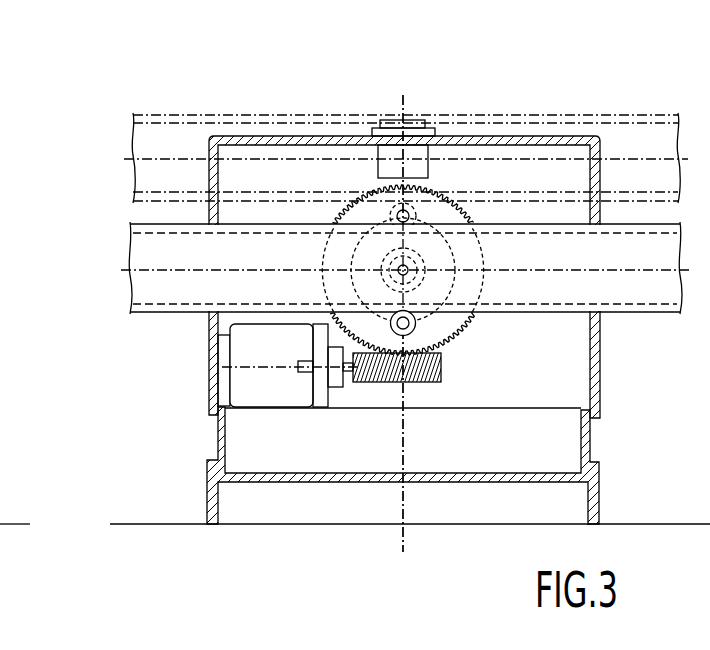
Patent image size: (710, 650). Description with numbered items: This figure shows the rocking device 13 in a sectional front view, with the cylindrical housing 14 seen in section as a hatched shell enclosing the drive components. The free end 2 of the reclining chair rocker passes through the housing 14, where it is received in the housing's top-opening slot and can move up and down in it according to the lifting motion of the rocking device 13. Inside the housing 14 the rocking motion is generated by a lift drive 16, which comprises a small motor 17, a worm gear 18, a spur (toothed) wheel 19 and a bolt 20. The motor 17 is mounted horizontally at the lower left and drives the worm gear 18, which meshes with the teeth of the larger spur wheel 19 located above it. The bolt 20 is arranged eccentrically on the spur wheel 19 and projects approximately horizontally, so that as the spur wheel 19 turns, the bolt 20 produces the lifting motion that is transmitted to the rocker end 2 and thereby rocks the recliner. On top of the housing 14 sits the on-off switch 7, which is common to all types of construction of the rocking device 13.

The free end of the reclining chair rocker 2 is at (652, 243).
The on-off switch 7 is at (413, 122).
The rocking device 13 is at (553, 113).
The cylindrical housing 14 is at (277, 136).
The lift drive 16 is at (326, 416).
The motor 17 is at (250, 387).
The worm gear 18 is at (441, 370).
The spur wheel 19 is at (334, 332).
The bolt 20 is at (415, 325).